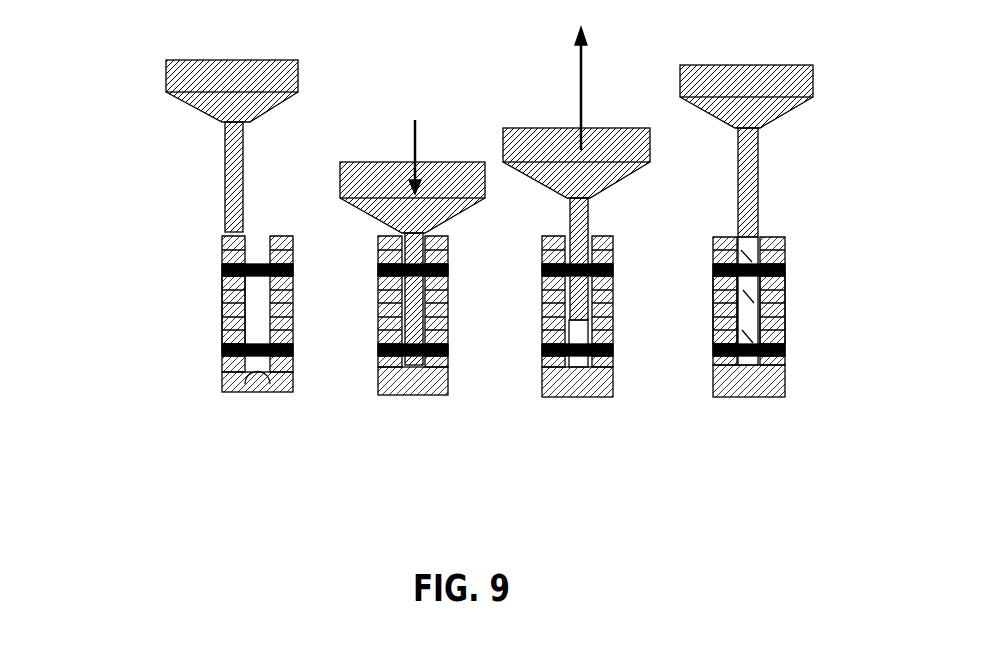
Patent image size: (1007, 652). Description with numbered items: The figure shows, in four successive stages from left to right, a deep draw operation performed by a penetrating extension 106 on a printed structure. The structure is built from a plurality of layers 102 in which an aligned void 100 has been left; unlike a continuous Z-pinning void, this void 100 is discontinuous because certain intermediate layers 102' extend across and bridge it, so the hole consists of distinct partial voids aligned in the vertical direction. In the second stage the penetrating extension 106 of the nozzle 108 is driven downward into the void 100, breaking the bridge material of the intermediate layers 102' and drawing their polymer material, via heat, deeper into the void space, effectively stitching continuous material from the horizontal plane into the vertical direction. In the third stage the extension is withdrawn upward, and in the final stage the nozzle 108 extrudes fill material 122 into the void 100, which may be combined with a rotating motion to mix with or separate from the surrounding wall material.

The void 100 is at (258, 286).
The layers 102 is at (518, 355).
The intermediate layers 102' is at (175, 377).
The penetrating extension 106 is at (233, 184).
The nozzle 108 is at (788, 100).
The fill material 122 is at (740, 262).